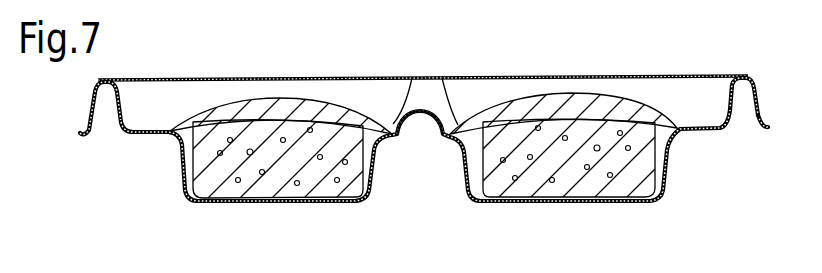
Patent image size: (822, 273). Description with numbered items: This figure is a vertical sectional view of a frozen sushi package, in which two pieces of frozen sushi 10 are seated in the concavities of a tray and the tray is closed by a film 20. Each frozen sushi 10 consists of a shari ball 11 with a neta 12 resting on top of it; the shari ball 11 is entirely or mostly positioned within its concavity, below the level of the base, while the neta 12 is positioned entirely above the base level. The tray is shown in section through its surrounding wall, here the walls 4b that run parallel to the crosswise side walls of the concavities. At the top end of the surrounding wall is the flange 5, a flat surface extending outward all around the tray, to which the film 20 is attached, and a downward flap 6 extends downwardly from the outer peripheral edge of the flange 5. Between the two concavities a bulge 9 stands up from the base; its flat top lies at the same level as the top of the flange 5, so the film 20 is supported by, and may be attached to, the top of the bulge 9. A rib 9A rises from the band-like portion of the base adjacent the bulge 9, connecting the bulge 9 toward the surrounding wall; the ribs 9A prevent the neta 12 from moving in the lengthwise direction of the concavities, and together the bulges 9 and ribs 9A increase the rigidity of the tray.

The film 20 is at (152, 78).
The frozen sushi 10 is at (416, 130).
The neta 12 is at (318, 108).
The bulge 9 is at (452, 100).
The rib 9A is at (424, 108).
The shari ball 11 is at (280, 182).
The wall 4b is at (118, 100).
The flange 5 is at (102, 118).
The downward flap 6 is at (92, 101).